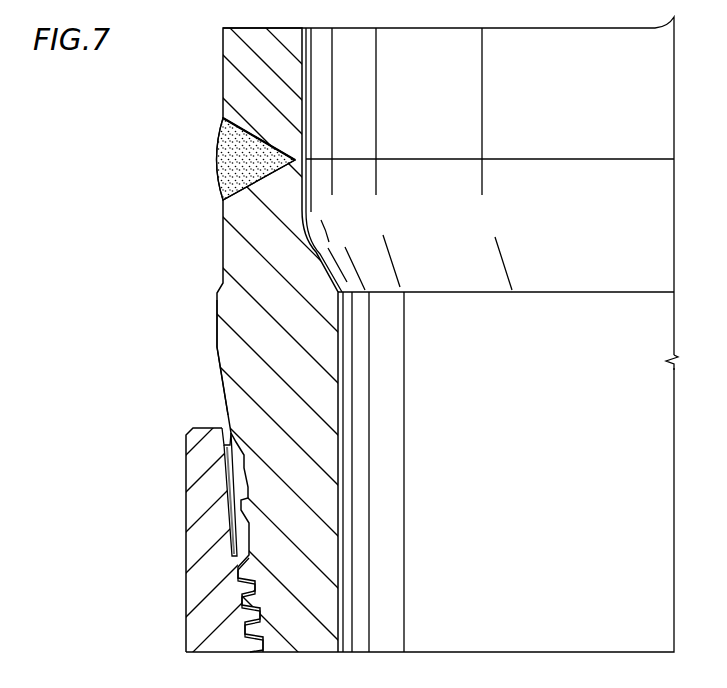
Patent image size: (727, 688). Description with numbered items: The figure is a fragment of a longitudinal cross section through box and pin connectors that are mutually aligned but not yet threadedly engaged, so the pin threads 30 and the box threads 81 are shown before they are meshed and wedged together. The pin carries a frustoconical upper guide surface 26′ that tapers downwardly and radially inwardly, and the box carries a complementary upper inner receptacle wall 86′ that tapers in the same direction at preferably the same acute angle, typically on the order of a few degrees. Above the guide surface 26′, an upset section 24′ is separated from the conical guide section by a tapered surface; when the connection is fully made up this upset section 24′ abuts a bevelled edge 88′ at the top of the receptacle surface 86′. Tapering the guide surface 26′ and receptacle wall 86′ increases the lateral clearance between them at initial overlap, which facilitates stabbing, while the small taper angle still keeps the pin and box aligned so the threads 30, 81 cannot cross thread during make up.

The upset section 24′ is at (217, 318).
The upper guide surface 26′ is at (181, 357).
The bevelled edge 88′ is at (218, 440).
The upper inner receptacle wall 86′ is at (228, 507).
The box threads 81 is at (240, 630).
The pin threads 30 is at (257, 596).